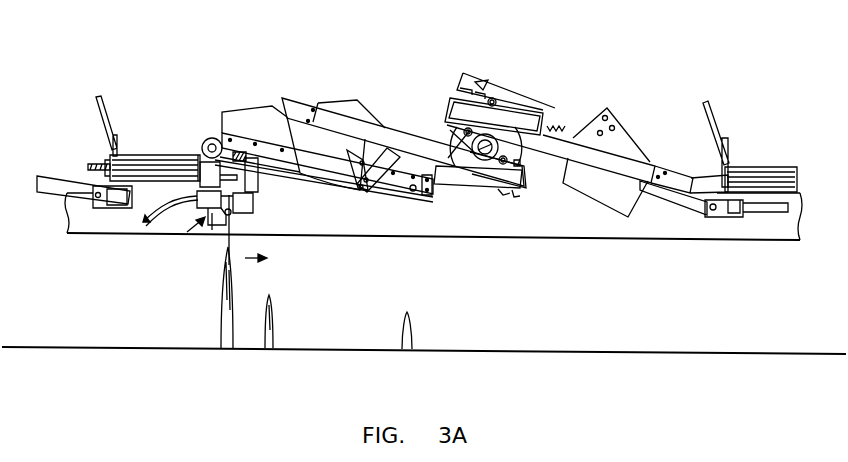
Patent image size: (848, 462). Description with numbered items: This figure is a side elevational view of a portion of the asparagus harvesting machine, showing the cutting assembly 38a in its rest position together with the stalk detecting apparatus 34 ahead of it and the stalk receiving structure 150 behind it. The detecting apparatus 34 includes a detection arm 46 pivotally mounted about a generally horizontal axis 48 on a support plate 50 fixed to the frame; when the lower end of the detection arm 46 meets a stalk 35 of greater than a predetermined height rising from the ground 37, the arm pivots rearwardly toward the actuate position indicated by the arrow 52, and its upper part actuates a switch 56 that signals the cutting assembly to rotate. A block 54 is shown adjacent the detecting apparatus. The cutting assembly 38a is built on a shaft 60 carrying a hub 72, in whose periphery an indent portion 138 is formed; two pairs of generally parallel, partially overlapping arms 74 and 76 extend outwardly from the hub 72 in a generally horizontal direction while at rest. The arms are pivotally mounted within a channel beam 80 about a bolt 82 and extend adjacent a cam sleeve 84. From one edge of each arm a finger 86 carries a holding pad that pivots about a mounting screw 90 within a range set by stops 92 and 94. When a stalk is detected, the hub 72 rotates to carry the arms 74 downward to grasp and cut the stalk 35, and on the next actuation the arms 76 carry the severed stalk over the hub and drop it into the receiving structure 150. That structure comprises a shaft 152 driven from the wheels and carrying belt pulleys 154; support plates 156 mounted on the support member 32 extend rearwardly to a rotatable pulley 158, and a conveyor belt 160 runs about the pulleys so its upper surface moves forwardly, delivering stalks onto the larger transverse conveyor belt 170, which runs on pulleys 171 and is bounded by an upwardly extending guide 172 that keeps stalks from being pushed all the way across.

The support member 32 is at (232, 128).
The stalk detecting apparatus 34 is at (195, 232).
The stalk 35 is at (222, 308).
The ground 37 is at (492, 349).
The cutting assembly 38a is at (455, 77).
The detection arm 46 is at (229, 250).
The horizontal axis 48 is at (235, 218).
The support plate 50 is at (213, 213).
The arrow 52 is at (245, 262).
The block 54 is at (253, 193).
The switch 56 is at (197, 208).
The shaft 60 is at (508, 178).
The hub 72 is at (500, 194).
The pair of arms 74 is at (402, 122).
The pair of arms 76 is at (557, 113).
The channel beam 80 is at (548, 197).
The bolt 82 is at (516, 199).
The cam sleeve 84 is at (504, 190).
The finger 86 is at (381, 178).
The mounting screw 90 is at (347, 193).
The stop 92 is at (360, 160).
The stop 94 is at (382, 118).
The indent portion 138 is at (477, 198).
The stalk receiving structure 150 is at (245, 108).
The shaft 152 is at (212, 138).
The belt pulley 154 is at (207, 146).
The support plate 156 is at (268, 133).
The rotatable pulley 158 is at (416, 198).
The conveyor belt 160 is at (307, 191).
The conveyor belt 170 is at (140, 160).
The pulley 171 is at (110, 163).
The guide 172 is at (93, 112).